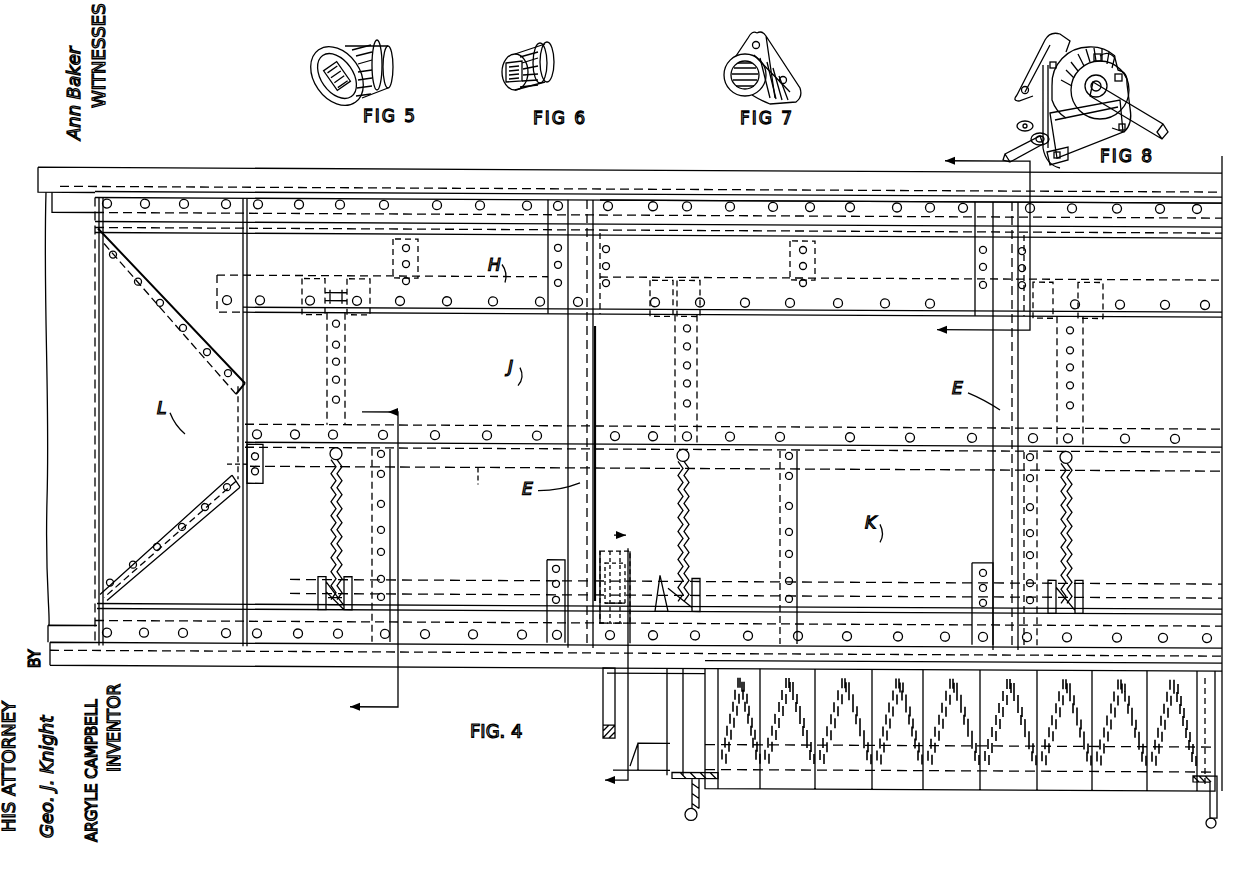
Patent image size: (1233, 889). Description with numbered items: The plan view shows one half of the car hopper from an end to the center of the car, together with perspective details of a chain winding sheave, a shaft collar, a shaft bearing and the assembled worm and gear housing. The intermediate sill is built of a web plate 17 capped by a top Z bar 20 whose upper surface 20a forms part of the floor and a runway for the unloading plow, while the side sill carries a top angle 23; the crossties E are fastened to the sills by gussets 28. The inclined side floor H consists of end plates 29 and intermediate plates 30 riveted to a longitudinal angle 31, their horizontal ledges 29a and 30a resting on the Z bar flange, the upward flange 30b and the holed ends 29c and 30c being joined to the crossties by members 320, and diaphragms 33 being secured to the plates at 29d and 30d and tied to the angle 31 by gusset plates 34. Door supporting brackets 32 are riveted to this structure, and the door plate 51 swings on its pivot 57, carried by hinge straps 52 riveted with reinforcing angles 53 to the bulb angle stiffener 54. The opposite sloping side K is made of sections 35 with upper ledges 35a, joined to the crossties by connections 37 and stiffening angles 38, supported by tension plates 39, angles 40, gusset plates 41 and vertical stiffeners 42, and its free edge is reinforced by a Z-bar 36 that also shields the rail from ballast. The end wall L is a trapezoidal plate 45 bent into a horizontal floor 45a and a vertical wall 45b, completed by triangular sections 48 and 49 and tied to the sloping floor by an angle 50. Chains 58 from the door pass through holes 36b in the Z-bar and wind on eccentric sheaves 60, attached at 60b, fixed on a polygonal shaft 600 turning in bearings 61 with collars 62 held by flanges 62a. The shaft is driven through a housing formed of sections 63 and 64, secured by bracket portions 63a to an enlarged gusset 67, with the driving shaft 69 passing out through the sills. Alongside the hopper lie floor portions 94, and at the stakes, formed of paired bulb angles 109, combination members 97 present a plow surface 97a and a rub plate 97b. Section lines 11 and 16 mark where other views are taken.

In FIG. 4, the section line 11 is at (603, 658).
In FIG. 4, the section line 16 is at (358, 559).
In FIG. 4, the web plate 17 is at (975, 246).
In FIG. 4, the top Z bar member 20 is at (84, 197).
In FIG. 4, the upper surface of Z bar 20a is at (290, 189).
In FIG. 4, the top angle 23 is at (656, 762).
In FIG. 4, the gusset 28 is at (1000, 662).
In FIG. 4, the end plate 29 is at (290, 312).
In FIG. 4, the horizontal ledge 29a is at (658, 192).
In FIG. 4, the end of plate 29 29c is at (558, 262).
In FIG. 4, the diaphragm connection 29d is at (410, 263).
In FIG. 4, the intermediate plate 30 is at (745, 312).
In FIG. 4, the horizontal ledge 30a is at (674, 195).
In FIG. 4, the upward flange 30b is at (602, 287).
In FIG. 4, the end of plate 30 30c is at (983, 268).
In FIG. 4, the diaphragm connection 30d is at (810, 263).
In FIG. 4, the longitudinally extending angle 31 is at (440, 312).
In FIG. 4, the door supporting bracket 32 is at (377, 314).
In FIG. 4, the connecting member 320 is at (567, 311).
In FIG. 4, the diaphragm 33 is at (405, 263).
In FIG. 4, the gusset plate 34 is at (432, 282).
In FIG. 4, the sloping side section 35 is at (452, 435).
In FIG. 4, the ledge 35a is at (447, 655).
In FIG. 4, the Z-bar 36 is at (332, 452).
In FIG. 4, the hole 36b is at (692, 454).
In FIG. 4, the connection 37 is at (550, 557).
In FIG. 4, the stiffening angle 38 is at (1038, 519).
In FIG. 4, the tension plate 39 is at (596, 418).
In FIG. 4, the angle 40 is at (396, 536).
In FIG. 4, the gusset plate 41 is at (380, 530).
In FIG. 4, the vertical stiffener 42 is at (388, 628).
In FIG. 4, the trapezoidal plate 45 is at (188, 525).
In FIG. 4, the horizontal floor 45a is at (75, 512).
In FIG. 4, the vertical wall 45b is at (248, 396).
In FIG. 4, the triangular section 48 is at (242, 255).
In FIG. 4, the triangular section 49 is at (232, 556).
In FIG. 4, the angle 50 is at (265, 478).
In FIG. 4, the door plate 51 is at (240, 327).
In FIG. 4, the hinge strap 52 is at (346, 346).
In FIG. 4, the reinforcing angle 53 is at (350, 398).
In FIG. 4, the stiffener 54 is at (506, 425).
In FIG. 4, the pivot 57 is at (336, 286).
In FIG. 4, the chain 58 is at (330, 510).
In FIG. 4, the sheave 60 is at (318, 572).
In FIG. 5, the sheave 60 is at (325, 70).
In FIG. 5, the chain attachment 60b is at (362, 50).
In FIG. 4, the bearing 61 is at (346, 574).
In FIG. 7, the bearing 61 is at (776, 66).
In FIG. 4, the collar 62 is at (370, 576).
In FIG. 6, the collar 62 is at (524, 88).
In FIG. 6, the flange 62a is at (552, 62).
In FIG. 4, the housing section 63 is at (620, 544).
In FIG. 8, the housing section 63 is at (1040, 63).
In FIG. 4, the bracket portion 63a is at (600, 535).
In FIG. 8, the bracket portion 63a is at (1036, 100).
In FIG. 4, the outer casting 64 is at (630, 562).
In FIG. 8, the outer casting 64 is at (1112, 68).
In FIG. 4, the enlarged gusset 67 is at (594, 515).
In FIG. 4, the driving shaft 69 is at (604, 690).
In FIG. 8, the driving shaft 69 is at (1005, 152).
In FIG. 4, the floor portion 94 is at (905, 745).
In FIG. 4, the combination member 97 is at (674, 704).
In FIG. 4, the plow surface 97a is at (694, 690).
In FIG. 4, the rub plate 97b is at (726, 777).
In FIG. 4, the bulb angle 109 is at (686, 813).
In FIG. 4, the shaft 600 is at (420, 586).
In FIG. 8, the shaft 600 is at (1146, 120).